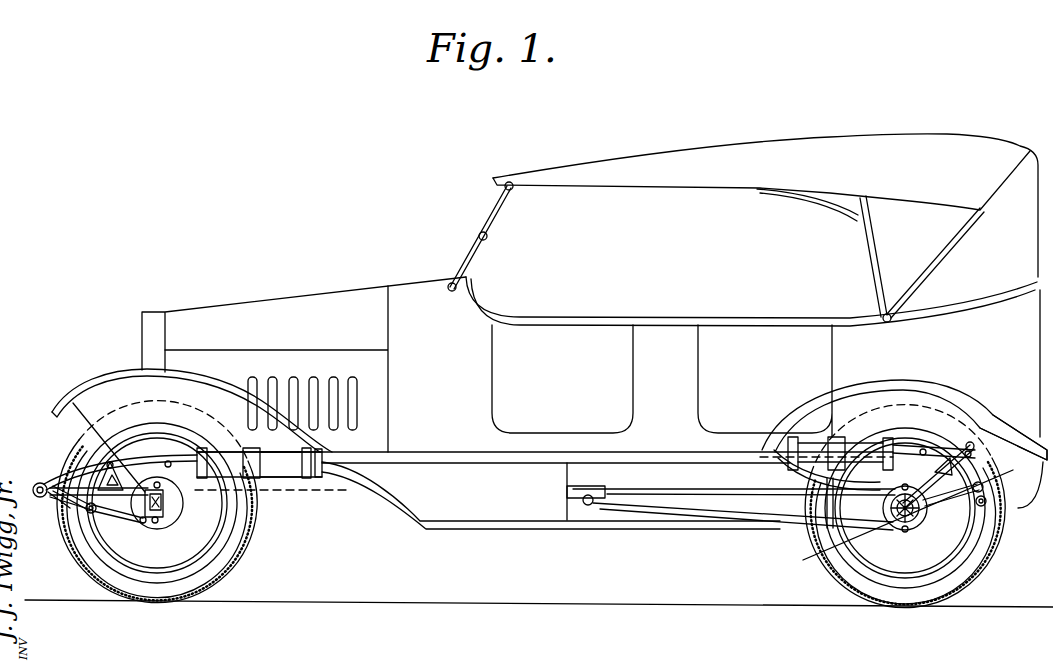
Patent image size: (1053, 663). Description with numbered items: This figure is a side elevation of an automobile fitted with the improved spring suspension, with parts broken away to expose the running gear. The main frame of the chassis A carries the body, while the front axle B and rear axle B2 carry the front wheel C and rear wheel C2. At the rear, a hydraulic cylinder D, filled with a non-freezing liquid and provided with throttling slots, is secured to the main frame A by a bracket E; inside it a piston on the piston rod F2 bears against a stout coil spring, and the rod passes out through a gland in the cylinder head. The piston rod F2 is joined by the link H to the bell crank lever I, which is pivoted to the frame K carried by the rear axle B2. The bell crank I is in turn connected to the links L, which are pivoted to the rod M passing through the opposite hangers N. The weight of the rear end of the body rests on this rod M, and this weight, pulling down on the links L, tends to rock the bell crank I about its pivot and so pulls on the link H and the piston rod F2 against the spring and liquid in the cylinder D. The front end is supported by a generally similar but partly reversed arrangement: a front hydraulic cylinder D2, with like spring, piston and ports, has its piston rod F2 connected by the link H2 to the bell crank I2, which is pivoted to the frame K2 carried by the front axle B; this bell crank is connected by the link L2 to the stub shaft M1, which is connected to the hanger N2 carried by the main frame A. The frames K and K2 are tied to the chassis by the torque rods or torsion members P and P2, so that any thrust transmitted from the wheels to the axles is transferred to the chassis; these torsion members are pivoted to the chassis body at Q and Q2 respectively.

The main frame of the chassis A is at (957, 420).
The torque rod or torsion member P is at (125, 495).
The hydraulic cylinder D2 is at (290, 470).
The hydraulic cylinder D is at (807, 443).
The bracket E is at (250, 449).
The piston rod F2 is at (188, 450).
The link H2 is at (128, 462).
The link H is at (935, 450).
The pivot Q2 is at (42, 481).
The bell crank I2 is at (138, 482).
The bell crank lever I is at (1013, 435).
The front axle B is at (165, 503).
The rear axle B2 is at (918, 520).
The frame K2 is at (167, 517).
The frame K is at (883, 512).
The link L2 is at (80, 510).
The link L is at (978, 482).
The stub shaft M1 is at (92, 512).
The rod M is at (983, 503).
The hanger N2 is at (62, 493).
The hanger N is at (983, 487).
The front wheel C is at (218, 580).
The rear wheel C2 is at (950, 603).
The torque rod or torsion member P2 is at (118, 527).
The pivot Q is at (585, 503).